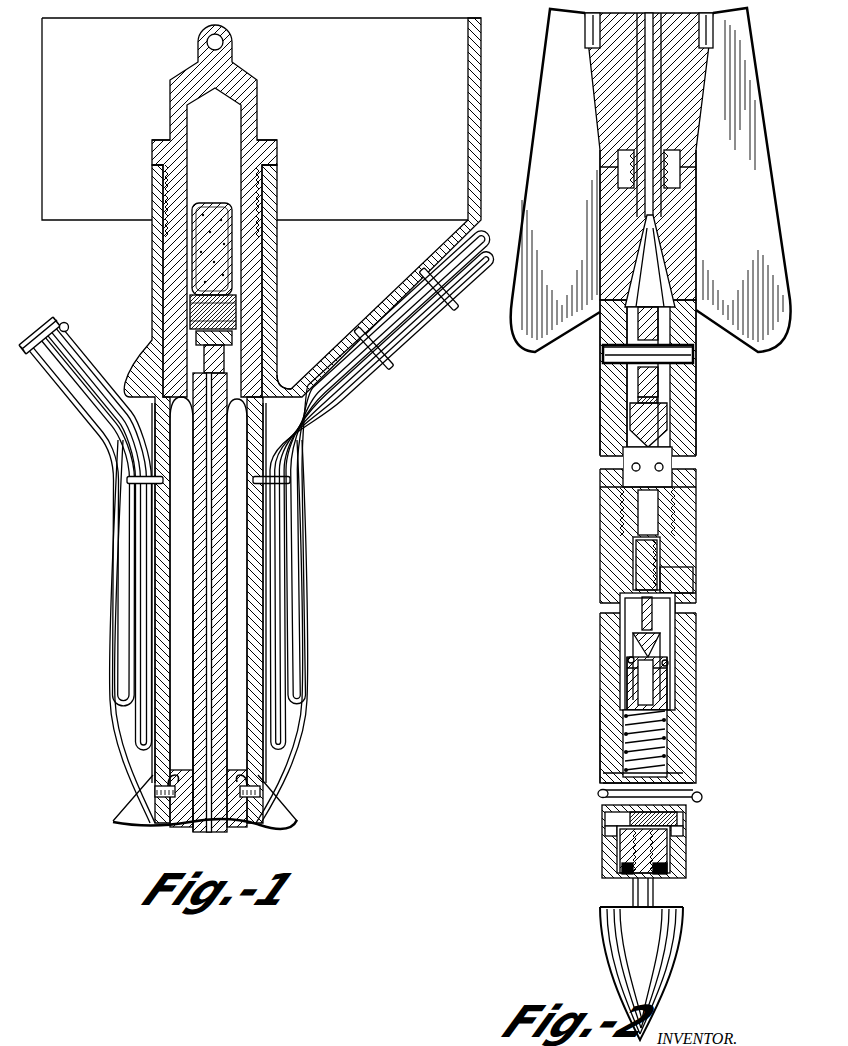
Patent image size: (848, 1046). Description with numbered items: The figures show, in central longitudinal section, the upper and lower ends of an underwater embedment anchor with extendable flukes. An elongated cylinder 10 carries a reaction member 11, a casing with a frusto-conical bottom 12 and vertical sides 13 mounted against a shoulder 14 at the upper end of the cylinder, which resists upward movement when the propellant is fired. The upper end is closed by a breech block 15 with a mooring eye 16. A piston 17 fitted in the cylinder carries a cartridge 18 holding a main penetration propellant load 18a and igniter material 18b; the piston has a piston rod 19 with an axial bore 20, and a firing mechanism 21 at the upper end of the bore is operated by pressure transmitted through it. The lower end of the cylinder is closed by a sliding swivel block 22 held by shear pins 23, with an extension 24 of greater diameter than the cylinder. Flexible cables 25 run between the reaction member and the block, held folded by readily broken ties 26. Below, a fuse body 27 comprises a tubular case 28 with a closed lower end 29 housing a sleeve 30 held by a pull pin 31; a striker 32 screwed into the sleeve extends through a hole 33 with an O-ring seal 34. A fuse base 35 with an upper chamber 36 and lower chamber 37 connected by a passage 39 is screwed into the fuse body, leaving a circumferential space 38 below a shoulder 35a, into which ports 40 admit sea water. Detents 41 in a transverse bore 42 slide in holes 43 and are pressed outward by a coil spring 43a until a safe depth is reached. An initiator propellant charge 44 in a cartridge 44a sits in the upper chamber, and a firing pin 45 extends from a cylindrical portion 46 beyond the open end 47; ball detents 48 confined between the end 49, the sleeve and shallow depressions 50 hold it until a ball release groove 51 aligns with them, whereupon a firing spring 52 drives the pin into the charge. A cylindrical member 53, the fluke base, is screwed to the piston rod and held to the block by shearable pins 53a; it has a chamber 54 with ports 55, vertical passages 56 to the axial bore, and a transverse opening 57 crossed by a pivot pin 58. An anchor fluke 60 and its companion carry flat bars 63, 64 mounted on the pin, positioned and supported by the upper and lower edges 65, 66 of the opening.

In FIG. 1, the elongated cylinder 10 is at (157, 773).
In FIG. 1, the reaction member 11 is at (483, 141).
In FIG. 1, the frusto-conical bottom 12 is at (388, 301).
In FIG. 1, the vertical sides 13 is at (277, 192).
In FIG. 1, the shoulder 14 is at (277, 157).
In FIG. 1, the breech block 15 is at (262, 98).
In FIG. 1, the mooring eye 16 is at (232, 37).
In FIG. 1, the piston 17 is at (273, 388).
In FIG. 1, the cartridge 18 is at (232, 203).
In FIG. 1, the main penetration propellant load 18a is at (225, 208).
In FIG. 1, the igniter material 18b is at (237, 300).
In FIG. 1, the piston rod 19 is at (200, 527).
In FIG. 2, the piston rod 19 is at (633, 117).
In FIG. 1, the axial bore 20 is at (195, 493).
In FIG. 2, the axial bore 20 is at (650, 132).
In FIG. 1, the firing mechanism 21 is at (262, 335).
In FIG. 1, the sliding swivel block 22 is at (246, 774).
In FIG. 2, the sliding swivel block 22 is at (600, 104).
In FIG. 1, the shear pins 23 is at (160, 791).
In FIG. 2, the extension 24 is at (585, 38).
In FIG. 1, the flexible cables 25 is at (117, 752).
In FIG. 1, the ties 26 is at (127, 480).
In FIG. 2, the fuse body 27 is at (590, 711).
In FIG. 2, the tubular case 28 is at (688, 741).
In FIG. 2, the closed lower end 29 is at (684, 877).
In FIG. 2, the sleeve 30 is at (610, 723).
In FIG. 2, the pull pin 31 is at (701, 790).
In FIG. 2, the striker 32 is at (683, 956).
In FIG. 2, the hole 33 is at (633, 883).
In FIG. 2, the O-ring seal 34 is at (665, 885).
In FIG. 2, the fuse base 35 is at (600, 524).
In FIG. 2, the shoulder 35a is at (688, 601).
In FIG. 2, the upper chamber 36 is at (668, 527).
In FIG. 2, the lower chamber 37 is at (640, 637).
In FIG. 2, the circumferential space 38 is at (670, 629).
In FIG. 2, the passage 39 is at (672, 577).
In FIG. 2, the ports 40 is at (605, 609).
In FIG. 2, the detents 41 is at (610, 831).
In FIG. 2, the transverse bore 42 is at (618, 843).
In FIG. 2, the holes 43 is at (605, 813).
In FIG. 2, the coil spring 43a is at (675, 841).
In FIG. 2, the initiator propellant charge 44 is at (635, 546).
In FIG. 2, the cartridge 44a is at (640, 561).
In FIG. 2, the firing pin 45 is at (632, 619).
In FIG. 2, the cylindrical portion 46 is at (655, 701).
In FIG. 2, the open end 47 is at (663, 691).
In FIG. 2, the ball detents 48 is at (628, 661).
In FIG. 2, the end 49 is at (665, 648).
In FIG. 2, the shallow depressions 50 is at (635, 674).
In FIG. 2, the ball release groove 51 is at (638, 684).
In FIG. 2, the firing spring 52 is at (660, 718).
In FIG. 2, the cylindrical member 53 is at (600, 411).
In FIG. 2, the shearable pins 53a is at (613, 167).
In FIG. 2, the chamber 54 is at (680, 408).
In FIG. 2, the ports 55 is at (610, 463).
In FIG. 2, the vertical passages 56 is at (626, 384).
In FIG. 2, the transverse opening 57 is at (659, 389).
In FIG. 2, the pivot pin 58 is at (603, 353).
In FIG. 2, the anchor fluke 60 is at (570, 239).
In FIG. 2, the flat bar 63 is at (630, 338).
In FIG. 2, the flat bar 64 is at (660, 379).
In FIG. 2, the upper edge 65 is at (695, 348).
In FIG. 2, the lower edge 66 is at (640, 400).